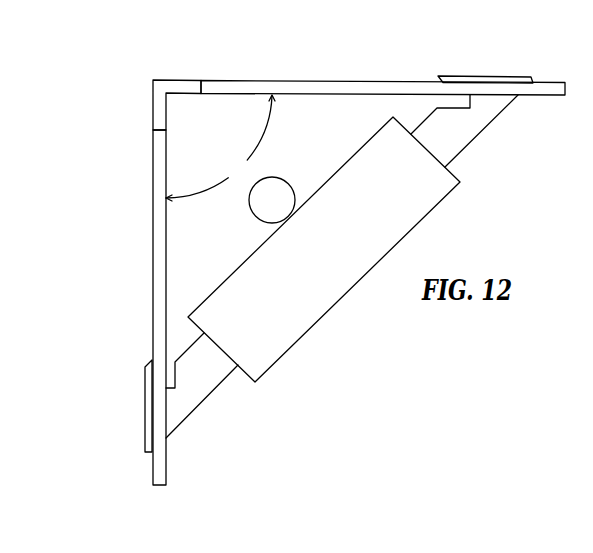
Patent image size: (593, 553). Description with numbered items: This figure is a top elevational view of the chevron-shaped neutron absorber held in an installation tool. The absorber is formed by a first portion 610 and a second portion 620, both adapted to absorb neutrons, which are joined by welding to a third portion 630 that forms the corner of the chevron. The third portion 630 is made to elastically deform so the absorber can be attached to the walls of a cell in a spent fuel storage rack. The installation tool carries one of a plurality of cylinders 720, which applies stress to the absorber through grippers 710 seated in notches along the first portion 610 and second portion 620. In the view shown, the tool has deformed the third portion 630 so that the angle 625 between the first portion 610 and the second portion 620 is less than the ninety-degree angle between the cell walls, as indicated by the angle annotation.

The first portion 610 is at (158, 268).
The second portion 620 is at (322, 83).
The angle 625 is at (258, 158).
The third portion 630 is at (166, 87).
The grippers 710 is at (502, 75).
The cylinders 720 is at (324, 249).